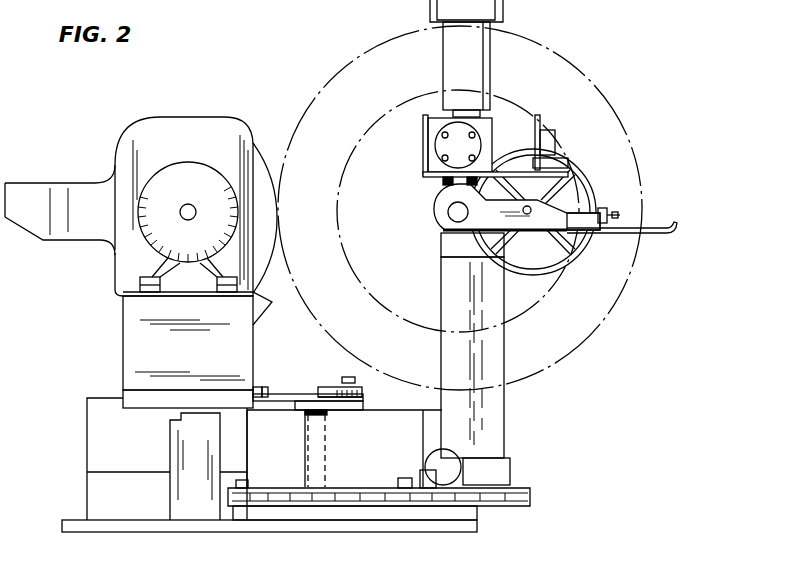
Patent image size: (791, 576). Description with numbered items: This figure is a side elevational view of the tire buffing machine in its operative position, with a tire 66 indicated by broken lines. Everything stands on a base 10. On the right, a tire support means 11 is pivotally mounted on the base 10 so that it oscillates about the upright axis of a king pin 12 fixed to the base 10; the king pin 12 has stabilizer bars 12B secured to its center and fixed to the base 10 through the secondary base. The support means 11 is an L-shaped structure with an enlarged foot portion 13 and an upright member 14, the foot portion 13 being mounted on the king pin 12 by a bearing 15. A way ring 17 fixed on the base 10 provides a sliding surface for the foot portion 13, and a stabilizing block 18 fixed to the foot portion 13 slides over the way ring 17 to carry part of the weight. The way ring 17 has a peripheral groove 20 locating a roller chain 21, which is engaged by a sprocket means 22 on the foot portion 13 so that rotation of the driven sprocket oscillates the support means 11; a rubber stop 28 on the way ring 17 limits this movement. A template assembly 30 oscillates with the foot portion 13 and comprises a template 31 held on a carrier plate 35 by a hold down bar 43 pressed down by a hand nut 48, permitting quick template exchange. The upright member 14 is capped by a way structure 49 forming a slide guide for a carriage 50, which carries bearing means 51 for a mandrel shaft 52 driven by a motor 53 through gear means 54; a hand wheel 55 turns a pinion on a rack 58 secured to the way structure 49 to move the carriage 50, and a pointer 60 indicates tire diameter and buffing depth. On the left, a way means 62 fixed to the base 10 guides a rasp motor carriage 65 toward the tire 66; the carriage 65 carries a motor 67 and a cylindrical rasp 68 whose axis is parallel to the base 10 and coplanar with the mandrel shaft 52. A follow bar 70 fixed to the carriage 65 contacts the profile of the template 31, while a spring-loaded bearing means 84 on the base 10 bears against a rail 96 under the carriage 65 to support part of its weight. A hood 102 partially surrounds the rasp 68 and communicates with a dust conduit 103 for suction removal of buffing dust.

The base 10 is at (108, 508).
The tire support means 11 is at (508, 420).
The king pin 12 is at (327, 453).
The stabilizer bars 12B is at (280, 410).
The foot portion 13 is at (411, 423).
The upright member 14 is at (485, 357).
The bearing 15 is at (327, 417).
The way ring 17 is at (285, 507).
The stabilizing block 18 is at (410, 507).
The peripheral groove 20 is at (357, 507).
The roller chain 21 is at (390, 507).
The sprocket means 22 is at (513, 480).
The rubber stop 28 is at (240, 506).
The template assembly 30 is at (327, 384).
The template 31 is at (283, 397).
The carrier plate 35 is at (363, 402).
The hold down bar 43 is at (360, 392).
The hand nut 48 is at (350, 380).
The way structure 49 is at (453, 247).
The carriage 50 is at (555, 222).
The bearing means 51 is at (443, 197).
The mandrel shaft 52 is at (448, 215).
The motor 53 is at (480, 50).
The gear means 54 is at (493, 133).
The hand wheel 55 is at (532, 276).
The rack 58 is at (660, 222).
The pointer 60 is at (603, 213).
The way means 62 is at (113, 453).
The rasp motor carriage 65 is at (142, 353).
The tire 66 is at (352, 65).
The motor 67 is at (150, 237).
The cylindrical rasp 68 is at (263, 160).
The follow bar 70 is at (273, 395).
The spring-loaded bearing means 84 is at (200, 493).
The rail 96 is at (138, 403).
The hood 102 is at (165, 115).
The dust conduit 103 is at (35, 192).